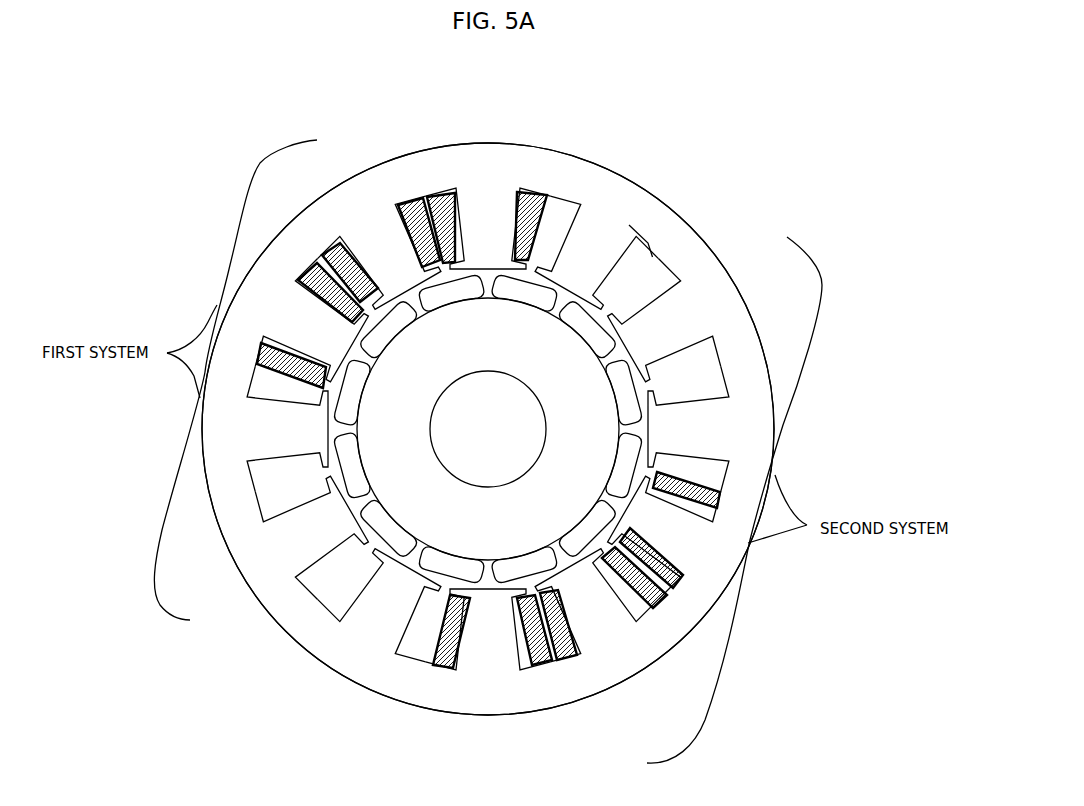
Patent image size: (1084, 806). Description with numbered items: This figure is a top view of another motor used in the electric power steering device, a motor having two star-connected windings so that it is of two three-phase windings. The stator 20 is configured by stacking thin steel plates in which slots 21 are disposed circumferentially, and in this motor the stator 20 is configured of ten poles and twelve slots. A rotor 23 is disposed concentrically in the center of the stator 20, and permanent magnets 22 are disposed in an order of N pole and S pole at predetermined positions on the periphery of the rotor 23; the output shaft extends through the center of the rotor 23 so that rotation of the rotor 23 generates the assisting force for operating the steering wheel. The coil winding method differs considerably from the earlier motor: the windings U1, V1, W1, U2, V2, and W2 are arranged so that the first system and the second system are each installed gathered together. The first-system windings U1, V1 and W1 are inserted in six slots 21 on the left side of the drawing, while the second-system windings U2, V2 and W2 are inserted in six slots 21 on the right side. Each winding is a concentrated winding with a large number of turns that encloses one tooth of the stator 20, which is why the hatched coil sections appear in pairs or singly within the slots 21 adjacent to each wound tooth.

The stator 20 is at (560, 150).
The slot 21 is at (300, 582).
The permanent magnet 22 is at (648, 257).
The rotor 23 is at (422, 535).
The U1 winding U1 is at (534, 191).
The V1 winding V1 is at (398, 204).
The W1 winding W1 is at (298, 280).
The U2 winding U2 is at (532, 667).
The V2 winding V2 is at (650, 611).
The W2 winding W2 is at (683, 584).